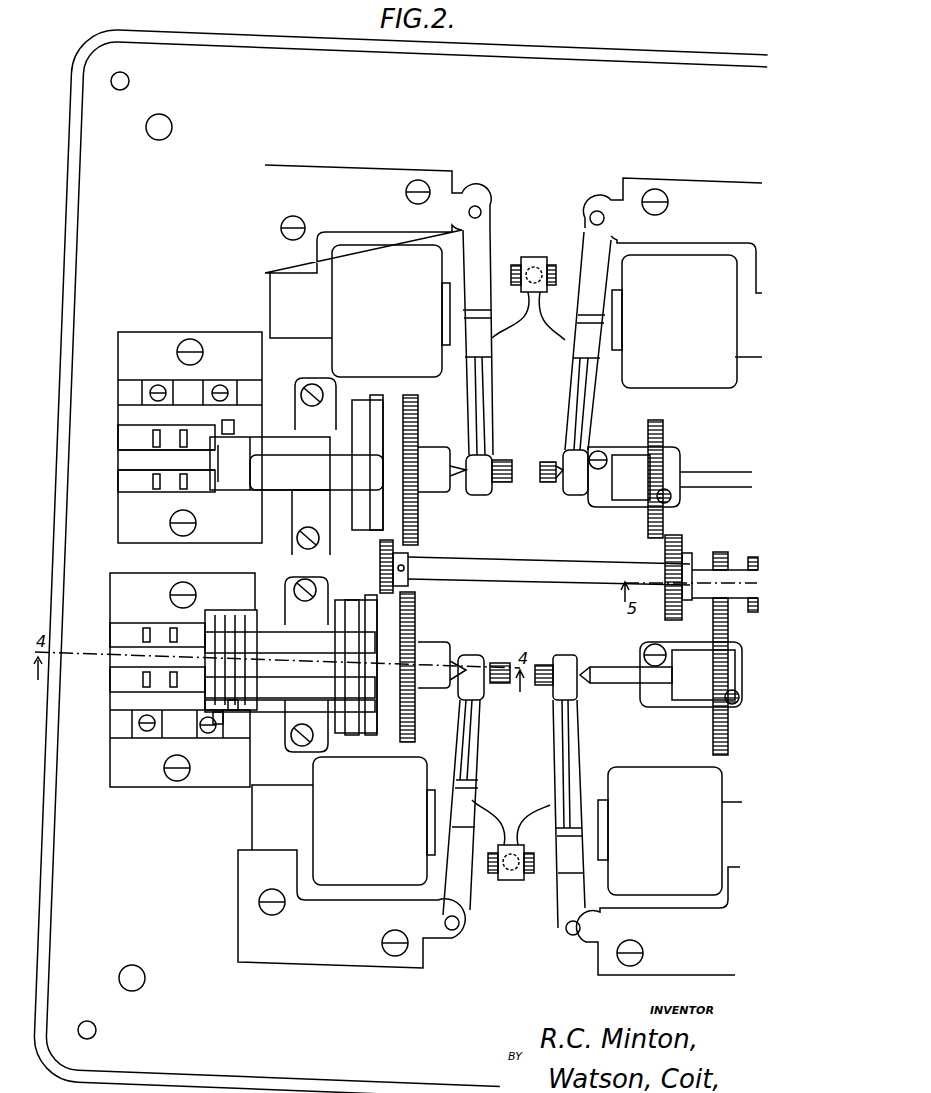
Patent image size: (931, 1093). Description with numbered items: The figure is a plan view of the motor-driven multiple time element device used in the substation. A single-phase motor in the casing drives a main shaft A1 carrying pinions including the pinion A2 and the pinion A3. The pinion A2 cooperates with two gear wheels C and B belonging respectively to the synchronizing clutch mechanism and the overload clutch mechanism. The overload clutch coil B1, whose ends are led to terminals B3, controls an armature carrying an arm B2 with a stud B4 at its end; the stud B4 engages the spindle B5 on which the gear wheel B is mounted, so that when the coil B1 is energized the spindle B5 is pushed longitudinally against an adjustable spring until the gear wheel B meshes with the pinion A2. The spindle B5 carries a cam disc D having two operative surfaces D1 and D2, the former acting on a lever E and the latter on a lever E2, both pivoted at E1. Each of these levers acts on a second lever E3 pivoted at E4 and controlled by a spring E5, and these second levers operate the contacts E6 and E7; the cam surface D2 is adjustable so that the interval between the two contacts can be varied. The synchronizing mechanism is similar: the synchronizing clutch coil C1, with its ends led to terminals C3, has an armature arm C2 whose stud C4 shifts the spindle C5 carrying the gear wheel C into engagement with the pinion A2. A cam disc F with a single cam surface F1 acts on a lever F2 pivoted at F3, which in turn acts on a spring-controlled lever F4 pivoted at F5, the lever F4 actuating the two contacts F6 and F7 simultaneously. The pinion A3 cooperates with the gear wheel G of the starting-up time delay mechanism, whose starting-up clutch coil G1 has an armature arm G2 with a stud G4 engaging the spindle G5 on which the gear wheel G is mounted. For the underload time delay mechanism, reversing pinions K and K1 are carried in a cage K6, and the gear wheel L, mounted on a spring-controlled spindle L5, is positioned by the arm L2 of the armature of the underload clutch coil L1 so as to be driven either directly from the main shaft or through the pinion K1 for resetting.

The terminals C3 is at (220, 384).
The synchronizing clutch coil C1 is at (391, 311).
The arm C2 is at (492, 402).
The spindle C5 is at (422, 422).
The gear wheel C is at (420, 442).
The stud C4 is at (472, 495).
The pivot F5 is at (238, 426).
The cam disc F is at (356, 398).
The cam surface F1 is at (378, 394).
The lever F2 is at (258, 492).
The pivot F3 is at (308, 508).
The contact F6 is at (160, 437).
The contact F7 is at (152, 480).
The spring controlled lever F4 is at (175, 490).
The starting-up clutch coil G1 is at (672, 283).
The arm G2 is at (590, 402).
The stud G4 is at (576, 492).
The gear wheel G is at (664, 426).
The spindle G5 is at (707, 476).
The pinion A2 is at (410, 556).
The main shaft A1 is at (552, 576).
The pinion A3 is at (664, 550).
The pinion K is at (755, 556).
The pinion K1 is at (721, 551).
The cage K6 is at (742, 610).
The gear wheel L is at (708, 740).
The spindle L5 is at (742, 678).
The arm L2 is at (576, 732).
The underload clutch coil L1 is at (654, 871).
The spindle B5 is at (388, 690).
The gear wheel B is at (406, 722).
The stud B4 is at (468, 660).
The arm B2 is at (472, 748).
The overload clutch coil B1 is at (351, 862).
The terminals B3 is at (200, 728).
The cam disc D is at (352, 690).
The operative surface D1 is at (371, 736).
The cam surface D2 is at (352, 733).
The lever E is at (245, 640).
The pivot E1 is at (302, 755).
The lever E2 is at (284, 705).
The second lever E3 is at (234, 712).
The pivot E4 is at (216, 725).
The spring E5 is at (268, 625).
The contact E6 is at (150, 630).
The contact E7 is at (150, 690).